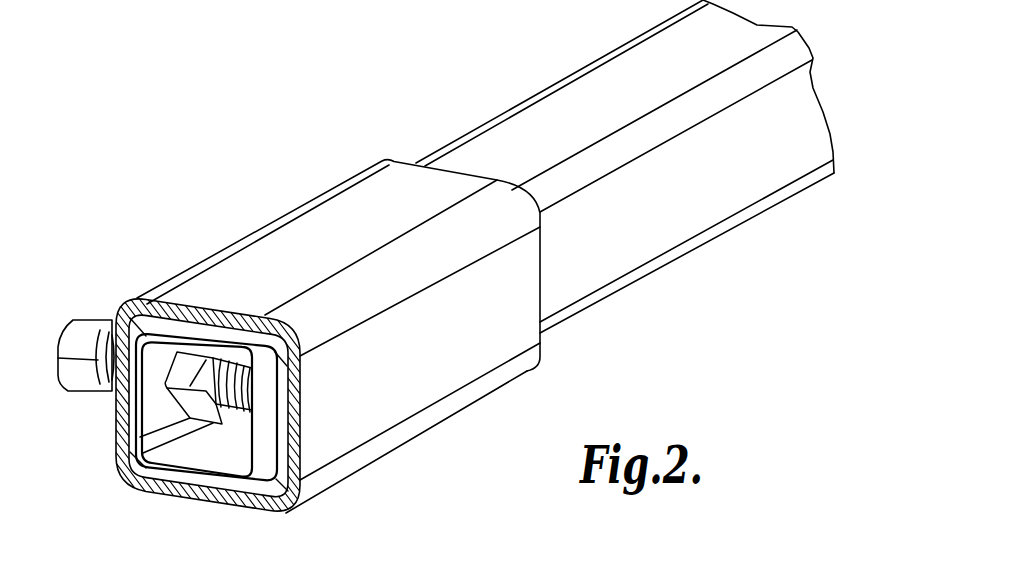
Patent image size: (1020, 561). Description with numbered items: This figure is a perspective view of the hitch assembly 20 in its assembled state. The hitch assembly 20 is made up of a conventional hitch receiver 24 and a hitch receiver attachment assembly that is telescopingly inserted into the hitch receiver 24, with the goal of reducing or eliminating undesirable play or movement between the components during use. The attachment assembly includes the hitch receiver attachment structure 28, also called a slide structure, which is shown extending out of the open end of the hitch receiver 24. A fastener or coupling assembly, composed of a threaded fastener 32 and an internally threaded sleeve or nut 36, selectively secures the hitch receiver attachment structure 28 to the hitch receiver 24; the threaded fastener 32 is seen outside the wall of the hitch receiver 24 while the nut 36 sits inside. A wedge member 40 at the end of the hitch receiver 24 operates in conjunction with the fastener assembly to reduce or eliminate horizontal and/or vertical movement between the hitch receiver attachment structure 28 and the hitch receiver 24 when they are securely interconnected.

The hitch assembly 20 is at (154, 215).
The hitch receiver 24 is at (262, 230).
The hitch receiver attachment structure 28 is at (643, 232).
The threaded fastener 32 is at (88, 322).
The internally threaded sleeve or nut 36 is at (187, 407).
The wedge member 40 is at (127, 303).